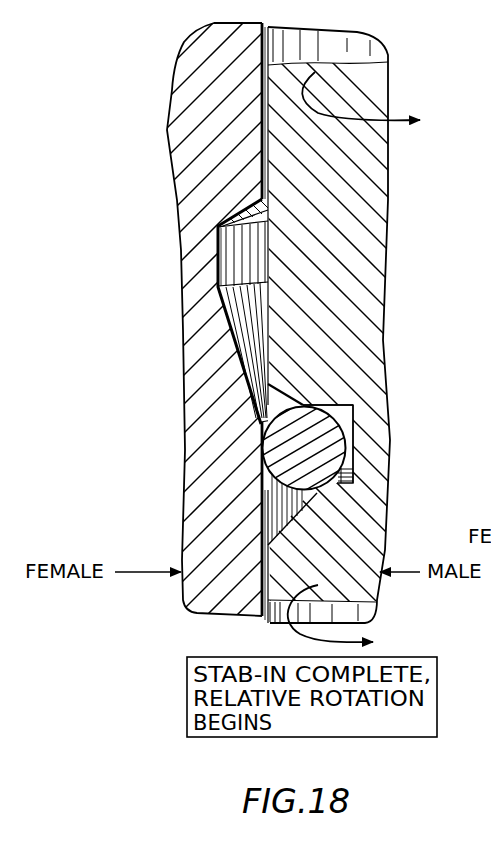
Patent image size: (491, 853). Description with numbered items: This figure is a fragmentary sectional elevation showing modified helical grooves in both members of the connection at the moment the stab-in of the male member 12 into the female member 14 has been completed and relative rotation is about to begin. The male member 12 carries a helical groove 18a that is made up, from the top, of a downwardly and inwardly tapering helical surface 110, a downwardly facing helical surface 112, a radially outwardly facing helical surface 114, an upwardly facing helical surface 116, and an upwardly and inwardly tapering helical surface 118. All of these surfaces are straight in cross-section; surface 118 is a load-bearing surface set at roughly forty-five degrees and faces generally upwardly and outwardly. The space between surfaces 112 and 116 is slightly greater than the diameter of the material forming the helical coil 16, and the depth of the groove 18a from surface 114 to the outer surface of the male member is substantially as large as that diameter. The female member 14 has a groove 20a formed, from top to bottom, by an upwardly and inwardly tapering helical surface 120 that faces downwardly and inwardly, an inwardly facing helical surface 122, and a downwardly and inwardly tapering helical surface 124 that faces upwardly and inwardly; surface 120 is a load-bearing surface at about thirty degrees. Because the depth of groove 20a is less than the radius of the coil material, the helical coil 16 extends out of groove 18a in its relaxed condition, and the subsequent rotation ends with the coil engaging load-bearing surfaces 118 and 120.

The male member 12 is at (385, 203).
The female member 14 is at (172, 163).
The helical coil 16 is at (345, 420).
The helical groove 18a is at (358, 460).
The groove 20a is at (219, 314).
The downwardly and inwardly tapering helical surface 110 is at (283, 398).
The downwardly facing helical surface 112 is at (336, 404).
The radially outwardly facing helical surface 114 is at (352, 440).
The upwardly facing helical surface 116 is at (352, 473).
The upwardly and inwardly tapering helical surface 118 is at (296, 513).
The upwardly and inwardly tapering helical surface 120 is at (246, 213).
The inwardly facing helical surface 122 is at (222, 262).
The downwardly and inwardly tapering helical surface 124 is at (250, 355).